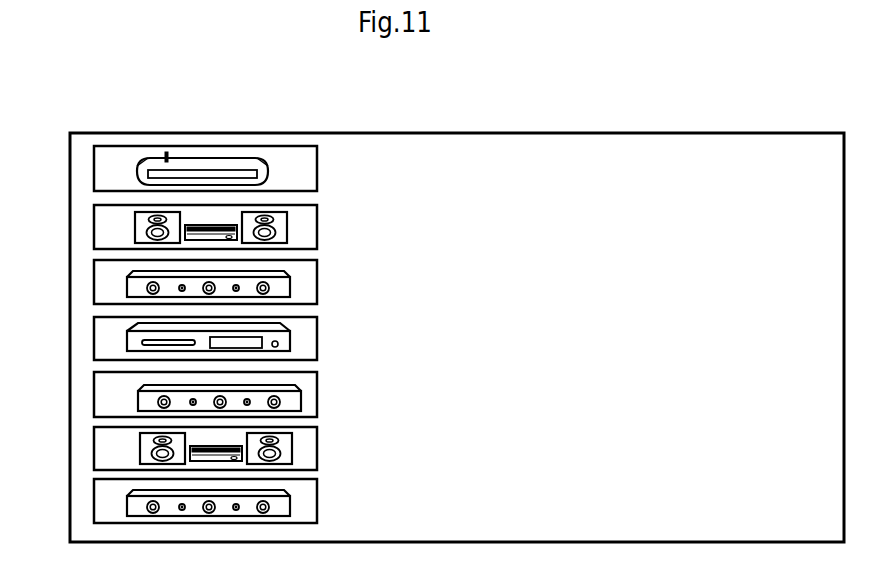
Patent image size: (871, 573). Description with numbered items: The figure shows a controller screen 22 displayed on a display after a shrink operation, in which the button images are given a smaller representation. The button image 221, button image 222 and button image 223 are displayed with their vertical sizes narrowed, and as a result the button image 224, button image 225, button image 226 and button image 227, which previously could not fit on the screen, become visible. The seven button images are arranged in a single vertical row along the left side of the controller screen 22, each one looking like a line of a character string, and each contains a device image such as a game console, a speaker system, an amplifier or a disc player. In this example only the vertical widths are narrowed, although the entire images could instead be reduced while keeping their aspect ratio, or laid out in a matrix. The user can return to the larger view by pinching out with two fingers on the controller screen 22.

The controller screen 22 is at (743, 148).
The button image 221 is at (95, 167).
The button image 222 is at (95, 224).
The button image 223 is at (95, 280).
The button image 224 is at (95, 334).
The button image 225 is at (95, 393).
The button image 226 is at (95, 444).
The button image 227 is at (95, 494).